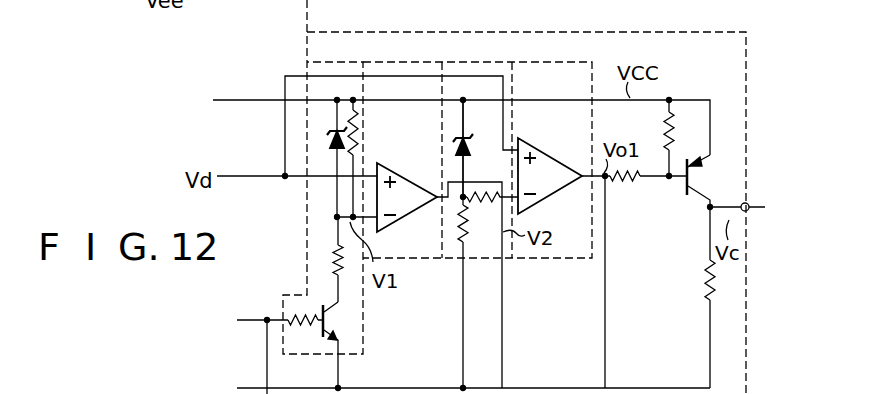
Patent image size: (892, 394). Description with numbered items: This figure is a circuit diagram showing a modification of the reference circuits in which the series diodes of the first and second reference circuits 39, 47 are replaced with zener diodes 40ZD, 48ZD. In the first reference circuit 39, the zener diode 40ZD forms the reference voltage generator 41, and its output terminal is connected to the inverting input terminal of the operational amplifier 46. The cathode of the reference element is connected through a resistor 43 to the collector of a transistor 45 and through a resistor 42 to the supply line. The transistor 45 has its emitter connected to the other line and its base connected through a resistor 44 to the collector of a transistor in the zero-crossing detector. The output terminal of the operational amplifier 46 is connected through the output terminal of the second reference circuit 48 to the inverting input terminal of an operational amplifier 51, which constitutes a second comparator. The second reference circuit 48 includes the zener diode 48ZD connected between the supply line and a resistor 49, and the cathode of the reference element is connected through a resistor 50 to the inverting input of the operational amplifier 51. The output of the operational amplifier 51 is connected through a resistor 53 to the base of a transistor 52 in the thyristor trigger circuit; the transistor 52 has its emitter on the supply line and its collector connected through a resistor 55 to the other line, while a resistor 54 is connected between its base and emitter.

The first reference circuit 39 is at (352, 62).
The second reference circuit 47 is at (465, 62).
The reference voltage generator 41 is at (318, 108).
The zener diode 40ZD is at (328, 141).
The resistor 42 is at (360, 138).
The zener diode 48ZD is at (447, 137).
The second reference circuit 48 is at (472, 131).
The operational amplifier 46 is at (412, 212).
The operational amplifier 51 is at (560, 160).
The resistor 49 is at (452, 238).
The resistor 50 is at (486, 206).
The resistor 53 is at (626, 183).
The resistor 54 is at (661, 136).
The transistor 52 is at (682, 184).
The resistor 55 is at (703, 278).
The resistor 43 is at (332, 262).
The transistor 45 is at (342, 320).
The resistor 44 is at (306, 335).